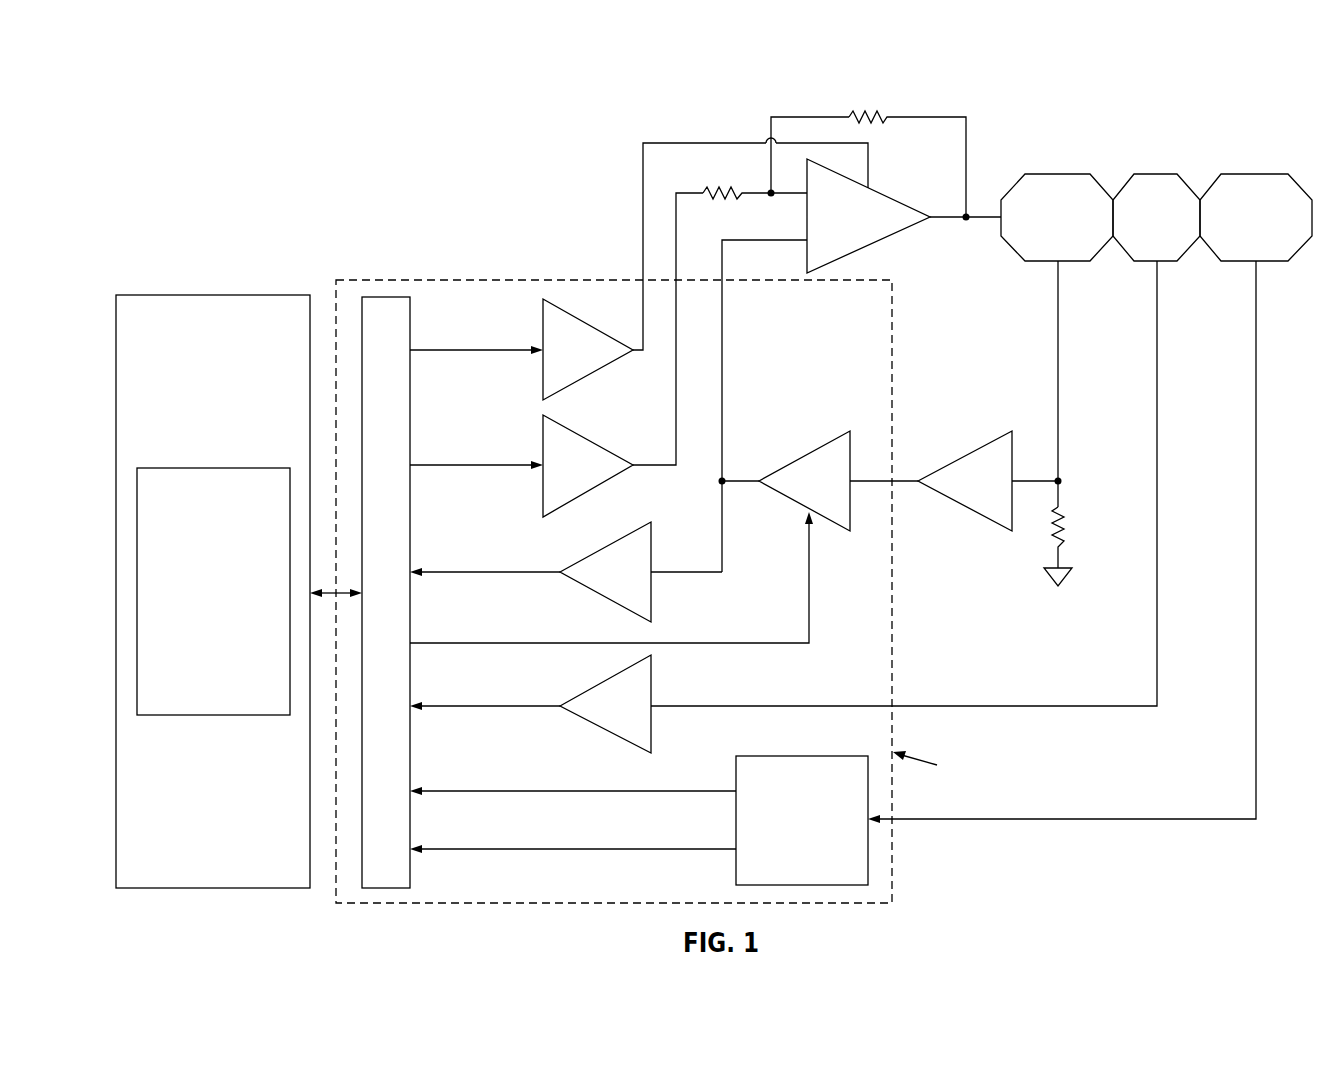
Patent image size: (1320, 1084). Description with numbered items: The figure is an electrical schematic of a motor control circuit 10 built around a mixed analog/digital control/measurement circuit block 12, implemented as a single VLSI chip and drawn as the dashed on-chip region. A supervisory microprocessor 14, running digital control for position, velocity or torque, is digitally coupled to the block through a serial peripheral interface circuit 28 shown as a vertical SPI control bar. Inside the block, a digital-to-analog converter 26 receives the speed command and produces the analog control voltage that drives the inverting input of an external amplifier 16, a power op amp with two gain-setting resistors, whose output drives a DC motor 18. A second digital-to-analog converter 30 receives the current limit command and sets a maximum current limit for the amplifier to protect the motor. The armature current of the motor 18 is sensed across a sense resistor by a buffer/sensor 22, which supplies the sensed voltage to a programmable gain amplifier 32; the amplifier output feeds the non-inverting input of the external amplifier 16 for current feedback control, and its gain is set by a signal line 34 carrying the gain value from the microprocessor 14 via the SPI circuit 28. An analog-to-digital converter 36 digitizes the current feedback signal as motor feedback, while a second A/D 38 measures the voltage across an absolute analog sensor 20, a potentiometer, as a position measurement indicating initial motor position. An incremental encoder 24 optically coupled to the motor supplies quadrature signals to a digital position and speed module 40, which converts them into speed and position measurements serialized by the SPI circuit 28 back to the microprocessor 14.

The motor control circuit 10 is at (243, 143).
The control/measurement circuit block 12 is at (472, 285).
The supervisory microprocessor 14 is at (165, 293).
The external amplifier 16 is at (795, 103).
The DC motor 18 is at (1057, 172).
The absolute analog sensor 20 is at (1157, 172).
The buffer/sensor 22 is at (965, 455).
The incremental encoder 24 is at (1262, 172).
The digital-to-analog converter 26 is at (590, 437).
The serial peripheral interface circuit 28 is at (385, 297).
The second digital-to-analog converter 30 is at (590, 322).
The programmable gain amplifier 32 is at (805, 455).
The signal line 34 is at (525, 642).
The analog-to-digital converter 36 is at (605, 545).
The second A/D 38 is at (605, 678).
The digital position and speed module 40 is at (785, 755).